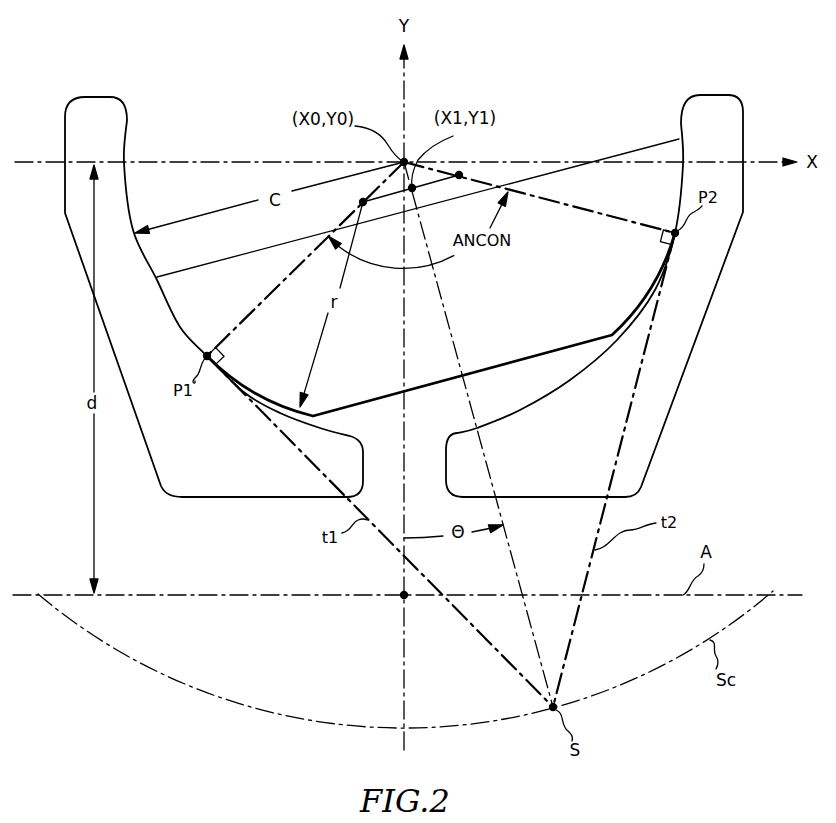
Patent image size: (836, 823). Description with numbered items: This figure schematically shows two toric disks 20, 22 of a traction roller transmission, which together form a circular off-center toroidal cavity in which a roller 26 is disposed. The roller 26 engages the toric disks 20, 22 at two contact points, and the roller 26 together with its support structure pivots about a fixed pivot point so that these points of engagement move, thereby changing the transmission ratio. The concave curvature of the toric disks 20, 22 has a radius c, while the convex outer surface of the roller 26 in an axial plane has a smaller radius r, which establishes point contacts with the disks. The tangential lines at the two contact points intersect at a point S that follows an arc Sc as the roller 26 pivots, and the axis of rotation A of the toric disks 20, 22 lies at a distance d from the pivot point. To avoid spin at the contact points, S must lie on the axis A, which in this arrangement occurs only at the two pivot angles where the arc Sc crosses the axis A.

The toric disk 20 is at (162, 437).
The toric disk 22 is at (697, 336).
The roller 26 is at (630, 195).